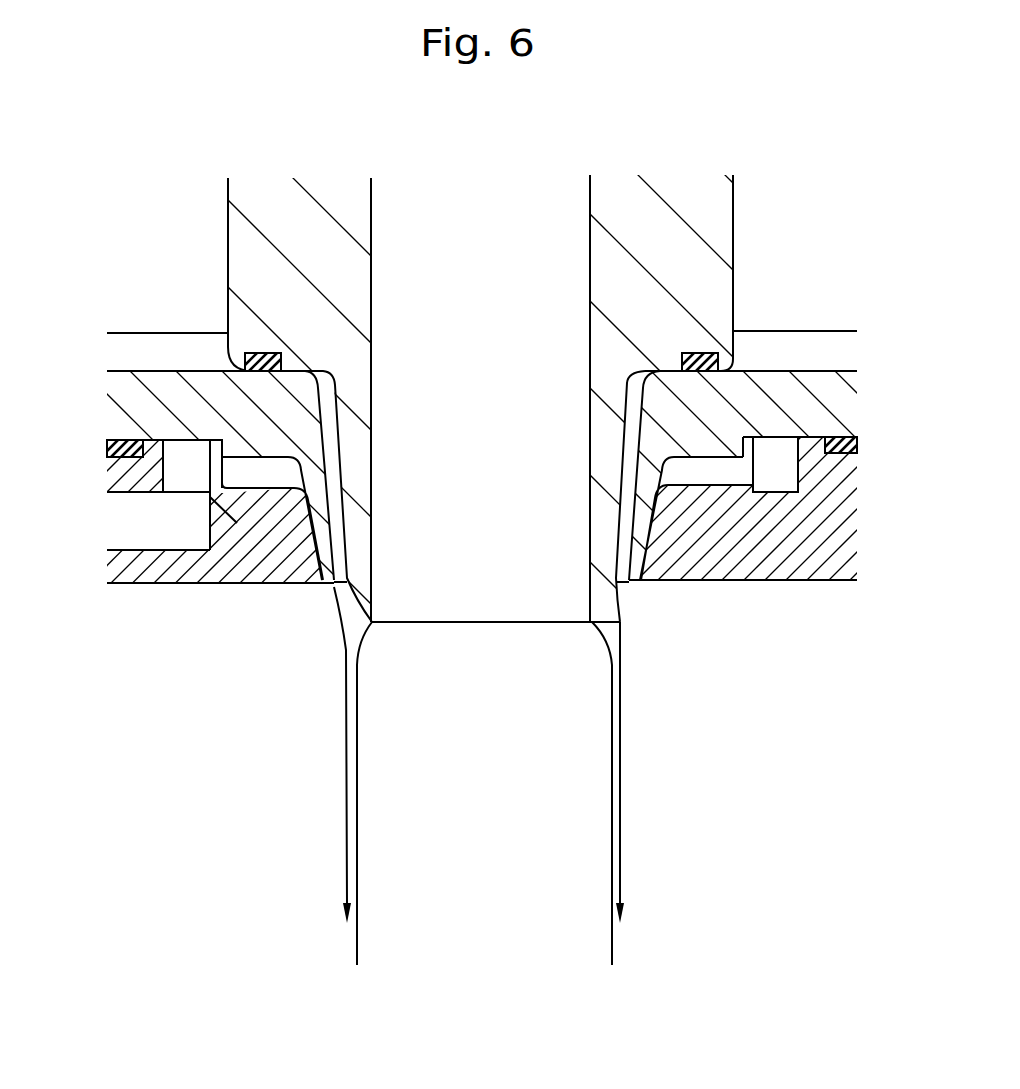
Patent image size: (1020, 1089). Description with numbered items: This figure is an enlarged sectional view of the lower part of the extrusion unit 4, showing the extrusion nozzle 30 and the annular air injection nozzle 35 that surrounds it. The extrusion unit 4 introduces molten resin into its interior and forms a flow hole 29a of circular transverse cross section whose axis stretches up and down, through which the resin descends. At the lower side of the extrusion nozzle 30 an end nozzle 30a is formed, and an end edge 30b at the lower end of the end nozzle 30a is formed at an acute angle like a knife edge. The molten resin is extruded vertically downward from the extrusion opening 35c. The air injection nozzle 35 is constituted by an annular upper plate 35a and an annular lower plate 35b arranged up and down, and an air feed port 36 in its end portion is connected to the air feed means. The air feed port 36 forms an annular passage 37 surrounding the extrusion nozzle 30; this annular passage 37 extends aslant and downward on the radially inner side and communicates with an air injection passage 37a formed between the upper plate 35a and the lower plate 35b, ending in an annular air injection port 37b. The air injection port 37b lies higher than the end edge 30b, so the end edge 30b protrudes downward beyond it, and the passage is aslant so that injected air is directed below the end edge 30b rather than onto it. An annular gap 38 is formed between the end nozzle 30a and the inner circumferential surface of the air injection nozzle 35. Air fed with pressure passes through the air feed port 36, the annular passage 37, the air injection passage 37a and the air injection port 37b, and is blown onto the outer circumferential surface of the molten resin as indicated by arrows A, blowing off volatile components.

The extrusion unit 4 is at (815, 595).
The flow hole 29a is at (371, 305).
The extrusion nozzle 30 is at (720, 293).
The end nozzle 30a is at (600, 537).
The end edge 30b is at (620, 628).
The air injection nozzle 35 is at (857, 414).
The upper plate 35a is at (140, 413).
The lower plate 35b is at (132, 577).
The extrusion opening 35c is at (490, 624).
The air feed port 36 is at (172, 542).
The annular passage 37 is at (290, 461).
The air injection passage 37a is at (296, 563).
The air injection port 37b is at (640, 585).
The annular gap 38 is at (633, 375).
The arrows A is at (622, 753).